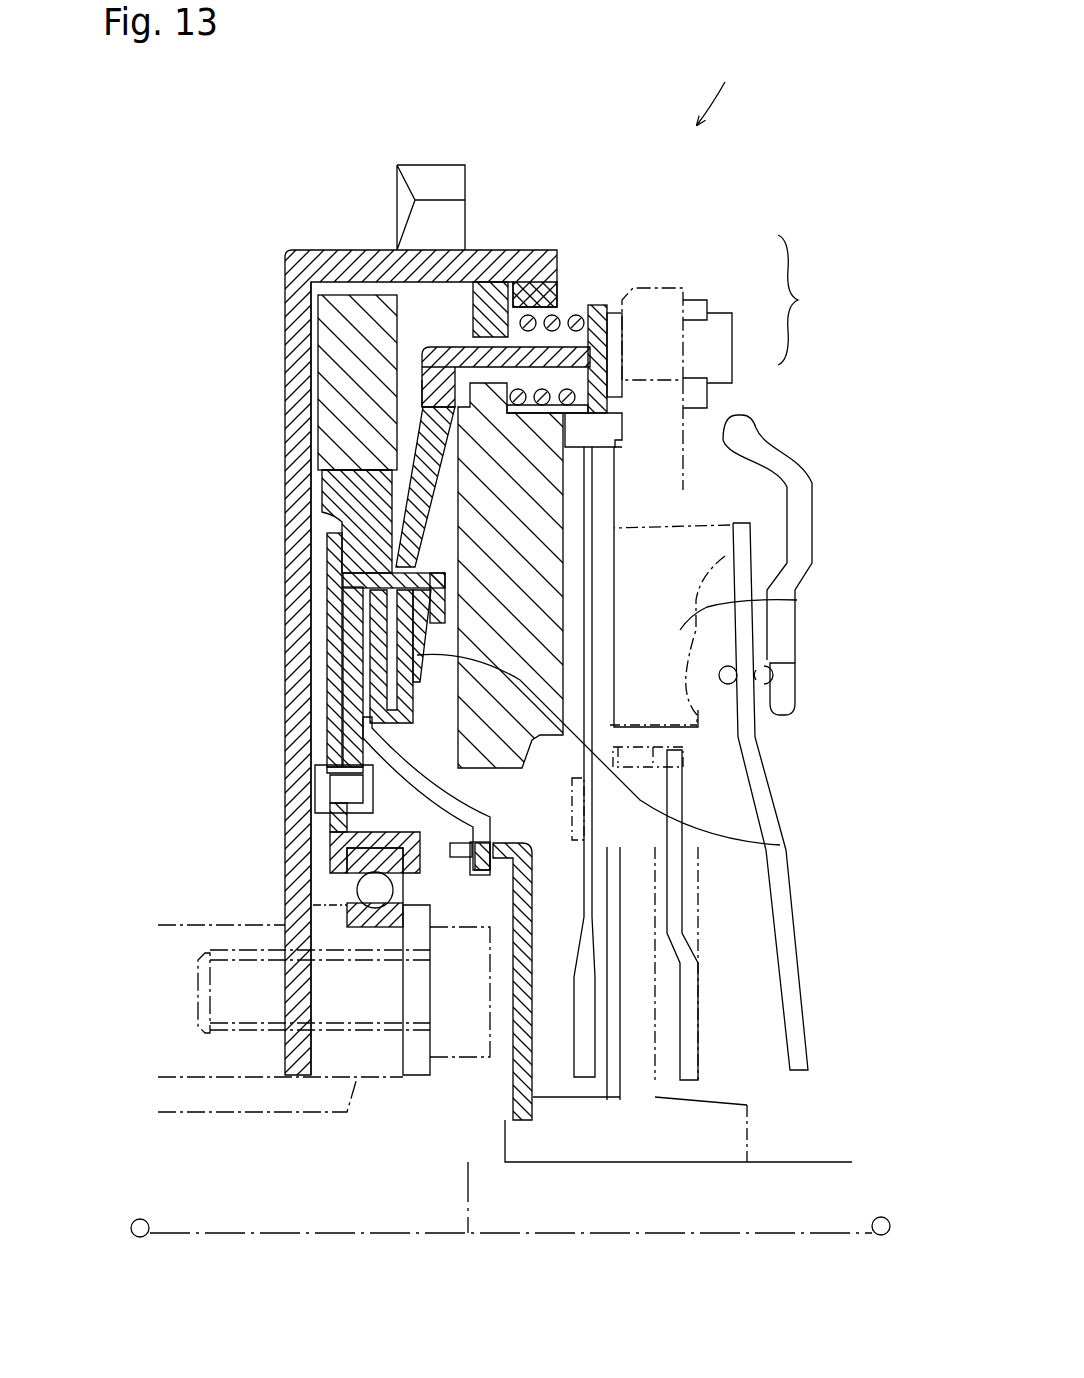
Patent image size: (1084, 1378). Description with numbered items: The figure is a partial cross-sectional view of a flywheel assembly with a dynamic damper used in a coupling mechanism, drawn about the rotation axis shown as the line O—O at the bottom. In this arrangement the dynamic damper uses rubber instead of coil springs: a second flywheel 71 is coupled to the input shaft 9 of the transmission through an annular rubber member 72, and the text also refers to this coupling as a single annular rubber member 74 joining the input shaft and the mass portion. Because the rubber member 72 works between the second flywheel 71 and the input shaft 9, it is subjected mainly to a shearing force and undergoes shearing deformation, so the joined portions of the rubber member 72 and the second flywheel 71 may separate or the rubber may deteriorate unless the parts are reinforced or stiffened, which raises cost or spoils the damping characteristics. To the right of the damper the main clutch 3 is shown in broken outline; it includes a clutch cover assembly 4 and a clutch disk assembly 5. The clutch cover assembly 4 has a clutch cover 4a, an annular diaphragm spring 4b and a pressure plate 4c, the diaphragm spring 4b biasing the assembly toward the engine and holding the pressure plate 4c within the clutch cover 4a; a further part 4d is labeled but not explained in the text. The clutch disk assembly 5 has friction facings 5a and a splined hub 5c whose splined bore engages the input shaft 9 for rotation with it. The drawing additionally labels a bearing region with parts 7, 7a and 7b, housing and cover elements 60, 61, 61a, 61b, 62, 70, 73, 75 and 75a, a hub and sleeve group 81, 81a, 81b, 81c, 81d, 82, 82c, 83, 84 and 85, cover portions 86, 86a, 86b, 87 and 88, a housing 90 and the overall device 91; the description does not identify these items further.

The main clutch 3 is at (799, 300).
The clutch cover assembly 4 is at (692, 288).
The clutch cover 4a is at (786, 690).
The diaphragm spring 4b is at (775, 967).
The pressure plate 4c is at (797, 600).
The pivot pin 4d is at (772, 668).
The clutch disk assembly 5 is at (604, 435).
The friction facings 5a is at (680, 630).
The splined hub 5c is at (750, 1110).
The bearing 7 is at (338, 893).
The bearing outer race 7a is at (347, 860).
The bearing inner race 7b is at (347, 917).
The input shaft 9 is at (813, 1158).
The clutch cover assembly 60 is at (505, 185).
The flange member 61 is at (578, 548).
The flange inner portion 61a is at (413, 365).
The flange seat 61b is at (500, 290).
The housing wall 62 is at (300, 353).
The hub body 70 is at (408, 343).
The second flywheel 71 is at (335, 332).
The annular rubber member 72 is at (355, 500).
The lever plate 73 is at (443, 547).
The annular rubber member 74 is at (395, 790).
The sleeve plate 75 is at (512, 1074).
The sleeve plate end 75a is at (496, 843).
The hub sleeve 81 is at (337, 683).
The sleeve flange 81a is at (358, 592).
The sleeve lower portion 81b is at (410, 873).
The sleeve outer strip 81c is at (335, 545).
The sleeve tab 81d is at (446, 608).
The retainer 82 is at (440, 808).
The retainer leg 82c is at (500, 870).
The inner sleeve 83 is at (375, 625).
The spacer 84 is at (385, 478).
The spring member 85 is at (624, 759).
The housing cover 86 is at (330, 270).
The cover side wall 86a is at (588, 302).
The cover inner portion 86b is at (430, 388).
The end plate 87 is at (603, 305).
The coil spring 88 is at (563, 330).
The engine housing 90 is at (182, 925).
The clutch device 91 is at (732, 88).